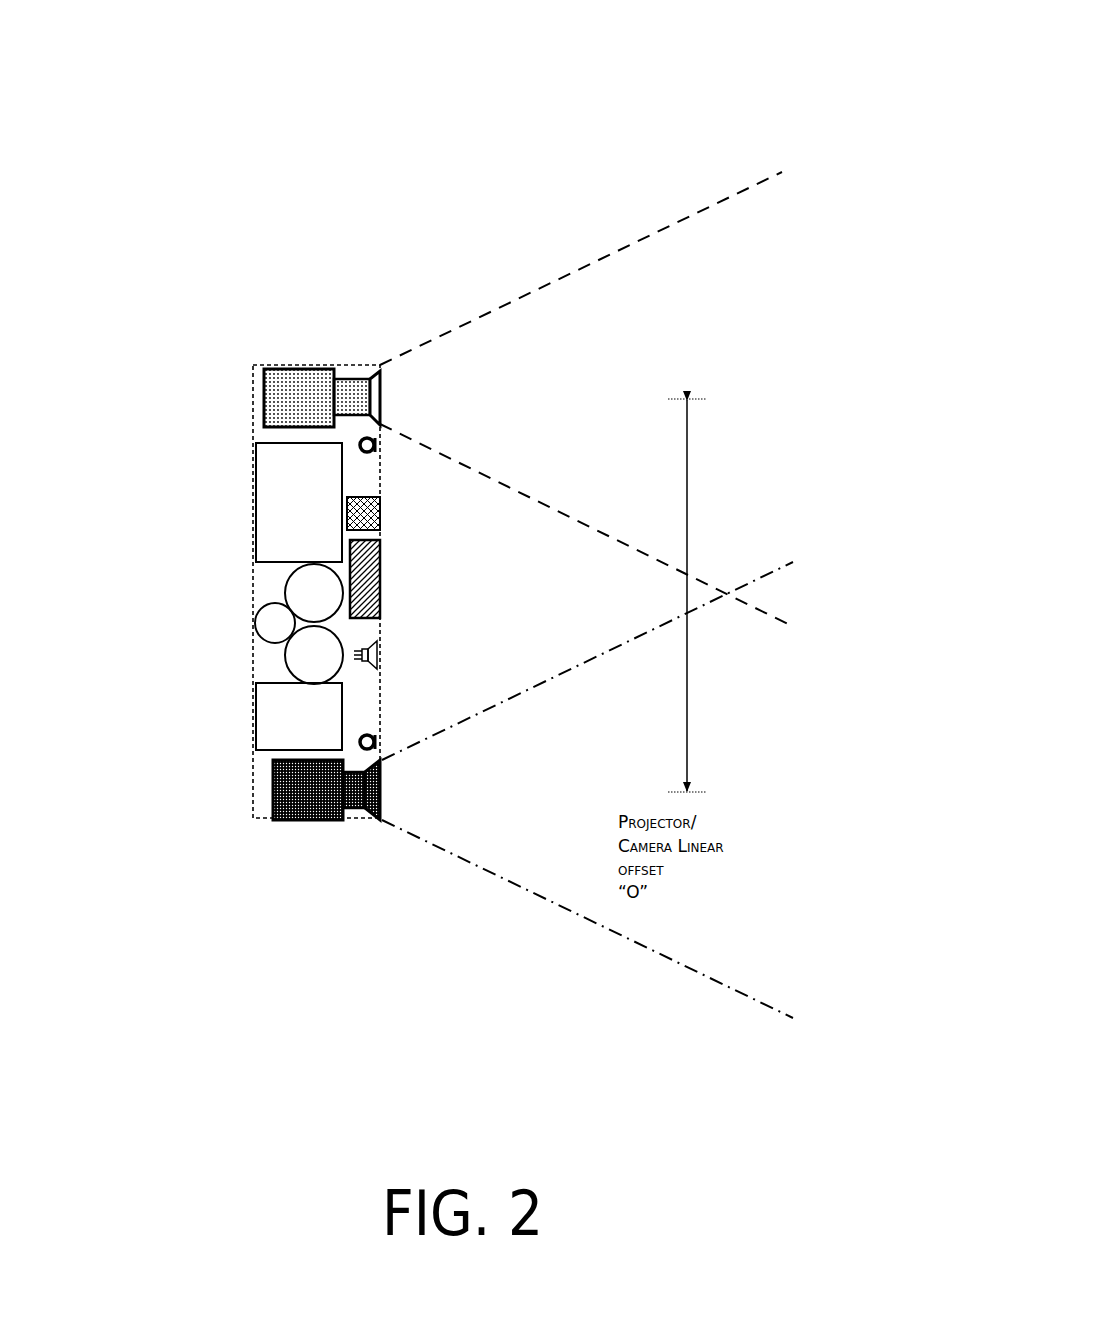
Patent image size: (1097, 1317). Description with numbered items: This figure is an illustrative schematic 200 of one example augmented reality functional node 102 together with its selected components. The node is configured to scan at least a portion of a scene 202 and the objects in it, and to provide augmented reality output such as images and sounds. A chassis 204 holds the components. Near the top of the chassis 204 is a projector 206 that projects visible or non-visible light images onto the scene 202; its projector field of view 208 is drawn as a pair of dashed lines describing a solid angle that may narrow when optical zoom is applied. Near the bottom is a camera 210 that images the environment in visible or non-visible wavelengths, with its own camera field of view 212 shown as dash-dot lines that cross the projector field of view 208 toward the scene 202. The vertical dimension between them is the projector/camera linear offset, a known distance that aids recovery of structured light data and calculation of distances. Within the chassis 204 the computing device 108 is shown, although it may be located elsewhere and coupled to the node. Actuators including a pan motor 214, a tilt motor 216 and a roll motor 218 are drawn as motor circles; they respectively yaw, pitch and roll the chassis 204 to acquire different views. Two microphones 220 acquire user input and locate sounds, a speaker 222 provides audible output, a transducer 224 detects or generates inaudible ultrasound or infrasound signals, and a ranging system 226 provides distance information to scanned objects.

The illustrative schematic 200 is at (752, 32).
The augmented reality functional node 102 is at (285, 366).
The chassis 204 is at (315, 366).
The projector 206 is at (298, 398).
The projector field of view 208 is at (588, 261).
The microphones 220 is at (378, 440).
The transducer 224 is at (381, 500).
The computing device 108 is at (298, 503).
The ranging system 226 is at (378, 575).
The pan motor 214 is at (285, 592).
The roll motor 218 is at (256, 628).
The tilt motor 216 is at (287, 652).
The speaker 222 is at (378, 650).
The camera 210 is at (307, 792).
The camera field of view 212 is at (540, 902).
The scene 202 is at (821, 595).